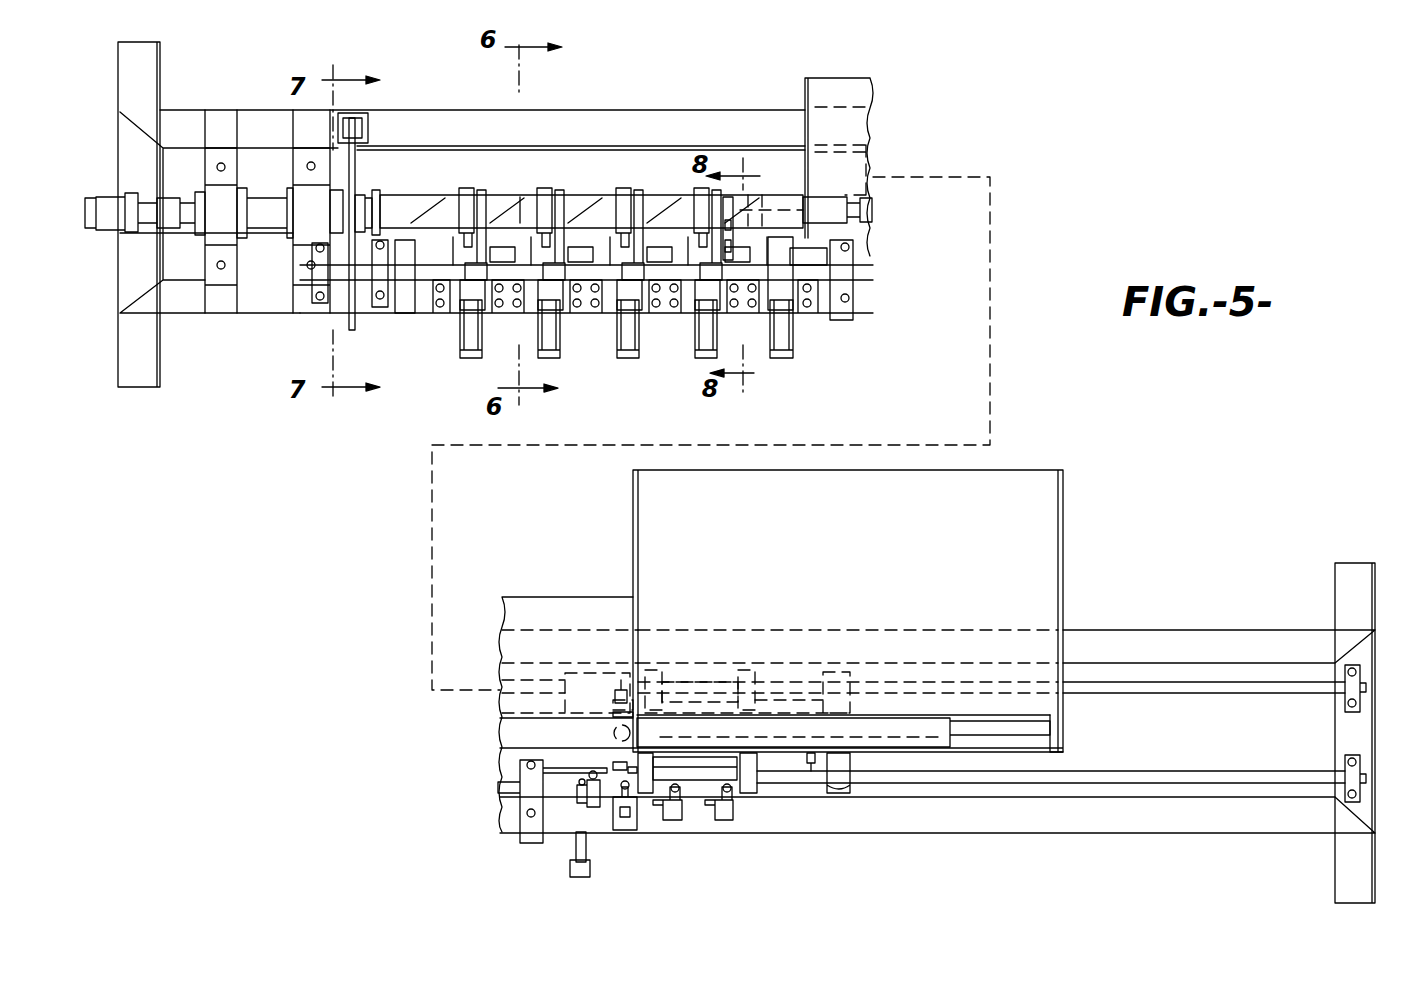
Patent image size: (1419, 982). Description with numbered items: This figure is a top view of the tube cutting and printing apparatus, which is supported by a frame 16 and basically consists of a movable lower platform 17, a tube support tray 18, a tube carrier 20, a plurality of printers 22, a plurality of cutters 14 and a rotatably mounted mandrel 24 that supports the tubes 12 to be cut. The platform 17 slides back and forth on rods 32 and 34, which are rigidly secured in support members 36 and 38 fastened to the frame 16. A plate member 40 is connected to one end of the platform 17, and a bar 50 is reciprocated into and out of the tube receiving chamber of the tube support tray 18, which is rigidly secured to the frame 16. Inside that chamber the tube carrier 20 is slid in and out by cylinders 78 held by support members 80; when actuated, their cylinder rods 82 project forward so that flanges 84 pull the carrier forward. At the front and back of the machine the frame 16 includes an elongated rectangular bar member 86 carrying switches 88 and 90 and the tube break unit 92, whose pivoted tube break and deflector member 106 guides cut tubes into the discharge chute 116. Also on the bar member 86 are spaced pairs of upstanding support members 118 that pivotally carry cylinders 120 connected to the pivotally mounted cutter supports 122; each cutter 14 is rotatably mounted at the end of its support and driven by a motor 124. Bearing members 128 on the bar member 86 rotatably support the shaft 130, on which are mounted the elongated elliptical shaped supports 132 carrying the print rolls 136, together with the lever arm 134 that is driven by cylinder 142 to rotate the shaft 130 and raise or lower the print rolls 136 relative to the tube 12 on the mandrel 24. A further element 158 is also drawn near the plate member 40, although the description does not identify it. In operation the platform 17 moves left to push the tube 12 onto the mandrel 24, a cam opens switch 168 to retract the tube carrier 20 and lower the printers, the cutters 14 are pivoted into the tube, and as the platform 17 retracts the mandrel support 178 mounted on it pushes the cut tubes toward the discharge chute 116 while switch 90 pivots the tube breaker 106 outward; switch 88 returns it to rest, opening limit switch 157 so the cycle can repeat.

The tube 12 is at (572, 205).
The cutter 14 is at (765, 255).
The frame 16 is at (150, 65).
The movable lower platform 17 is at (508, 160).
The tube support tray 18 is at (1063, 513).
The tube carrier 20 is at (612, 738).
The printer 22 is at (455, 190).
The mandrel 24 is at (797, 200).
The rod 32 is at (1283, 777).
The rod 34 is at (345, 163).
The support member 36 is at (1357, 795).
The support member 38 is at (1360, 672).
The plate member 40 is at (855, 790).
The bar 50 is at (838, 200).
The cylinder 78 is at (698, 670).
The support member 80 is at (753, 780).
The cylinder rod 82 is at (620, 762).
The flange 84 is at (595, 758).
The elongated rectangular bar member 86 is at (1203, 827).
The switch 88 is at (733, 817).
The switch 90 is at (678, 822).
The tube break unit 92 is at (566, 808).
The tube break and deflector member 106 is at (555, 762).
The discharge chute 116 is at (820, 97).
The upstanding support member 118 is at (800, 315).
The cylinder 120 is at (800, 348).
The cutter support 122 is at (735, 230).
The motor 124 is at (817, 252).
The bearing member 128 is at (860, 290).
The shaft 130 is at (405, 280).
The elongated elliptical shaped support 132 is at (558, 190).
The lever arm 134 is at (352, 220).
The print roll 136 is at (622, 190).
The cylinder 142 is at (368, 128).
The limit switch 157 is at (592, 812).
The bolt 158 is at (811, 765).
The switch 168 is at (632, 832).
The mandrel support 178 is at (374, 207).